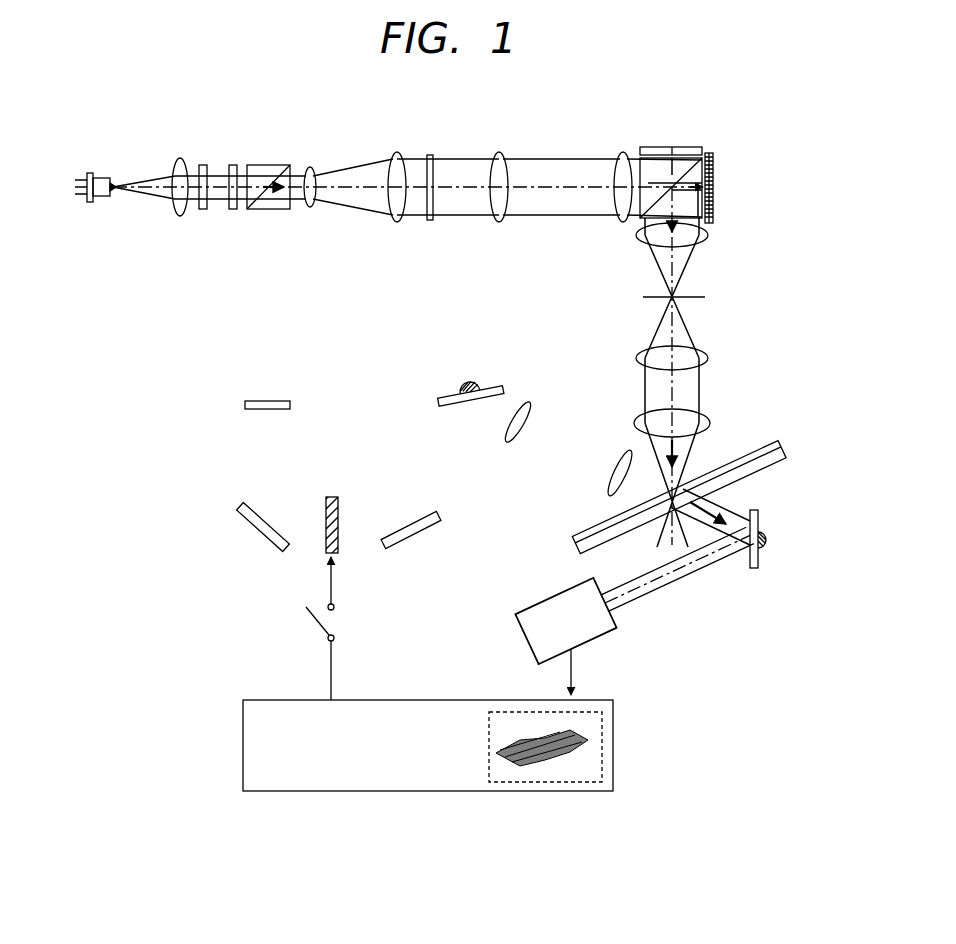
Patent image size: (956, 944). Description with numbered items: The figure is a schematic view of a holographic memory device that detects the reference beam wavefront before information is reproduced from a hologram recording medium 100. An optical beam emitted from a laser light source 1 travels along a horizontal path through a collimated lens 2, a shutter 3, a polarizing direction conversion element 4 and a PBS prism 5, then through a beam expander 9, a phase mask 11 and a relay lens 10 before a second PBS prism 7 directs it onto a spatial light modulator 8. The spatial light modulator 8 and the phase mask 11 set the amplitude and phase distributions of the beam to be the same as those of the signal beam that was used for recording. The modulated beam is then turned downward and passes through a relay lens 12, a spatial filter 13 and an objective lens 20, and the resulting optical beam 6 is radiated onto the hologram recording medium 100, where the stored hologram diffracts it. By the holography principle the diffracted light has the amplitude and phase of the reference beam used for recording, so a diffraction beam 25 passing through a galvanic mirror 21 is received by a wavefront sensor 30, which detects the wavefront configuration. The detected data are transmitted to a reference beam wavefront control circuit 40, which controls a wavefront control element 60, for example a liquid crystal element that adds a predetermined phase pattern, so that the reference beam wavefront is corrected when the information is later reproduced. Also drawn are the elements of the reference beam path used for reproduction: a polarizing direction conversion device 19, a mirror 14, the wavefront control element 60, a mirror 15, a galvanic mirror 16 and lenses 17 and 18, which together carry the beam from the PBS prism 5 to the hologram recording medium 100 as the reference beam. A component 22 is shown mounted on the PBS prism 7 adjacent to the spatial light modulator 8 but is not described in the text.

The laser light source 1 is at (103, 178).
The collimated lens 2 is at (181, 158).
The shutter 3 is at (203, 164).
The polarizing direction conversion element 4 is at (233, 164).
The PBS prism 5 is at (271, 164).
The optical beam 6 is at (688, 454).
The PBS prism 7 is at (651, 170).
The spatial light modulator 8 is at (716, 190).
The beam expander 9 is at (405, 148).
The relay lens 10 is at (632, 148).
The phase mask 11 is at (430, 222).
The relay lens 12 is at (633, 227).
The spatial filter 13 is at (700, 297).
The mirror 14 is at (268, 540).
The mirror 15 is at (412, 520).
The galvanic mirror 16 is at (492, 384).
The lens 17 is at (508, 444).
The lens 18 is at (613, 466).
The polarizing direction conversion device 19 is at (264, 401).
The objective lens 20 is at (700, 418).
The galvanic mirror 21 is at (760, 518).
The modulator driver 22 is at (688, 150).
The diffraction beam 25 is at (677, 578).
The wavefront sensor 30 is at (530, 640).
The reference beam wavefront control circuit 40 is at (261, 704).
The wavefront control element 60 is at (339, 497).
The hologram recording medium 100 is at (576, 538).